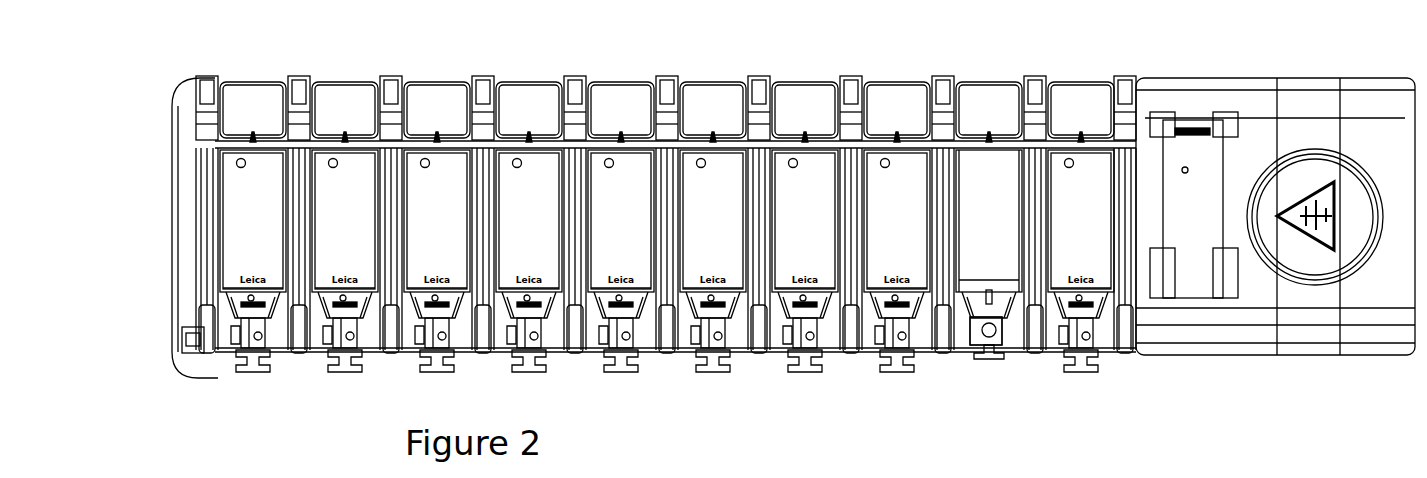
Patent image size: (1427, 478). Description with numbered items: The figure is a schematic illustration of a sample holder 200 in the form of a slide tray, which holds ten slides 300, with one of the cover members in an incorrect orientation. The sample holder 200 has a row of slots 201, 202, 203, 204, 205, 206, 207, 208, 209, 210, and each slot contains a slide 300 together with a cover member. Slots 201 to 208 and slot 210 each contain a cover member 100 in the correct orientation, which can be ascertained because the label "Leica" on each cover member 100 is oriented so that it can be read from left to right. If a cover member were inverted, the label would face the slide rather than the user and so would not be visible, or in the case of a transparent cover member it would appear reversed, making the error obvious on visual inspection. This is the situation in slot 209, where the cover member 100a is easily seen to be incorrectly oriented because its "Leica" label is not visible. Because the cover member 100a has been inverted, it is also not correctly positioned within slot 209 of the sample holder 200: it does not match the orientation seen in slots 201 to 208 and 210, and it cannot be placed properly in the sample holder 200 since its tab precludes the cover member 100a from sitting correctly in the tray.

The cover member 100 is at (197, 209).
The cover member 100a is at (983, 230).
The sample holder 200 is at (187, 376).
The slot 201 is at (253, 349).
The slot 202 is at (345, 349).
The slot 203 is at (437, 349).
The slot 204 is at (529, 349).
The slot 205 is at (621, 349).
The slot 206 is at (713, 349).
The slot 207 is at (805, 349).
The slot 208 is at (897, 349).
The slot 209 is at (989, 348).
The slot 210 is at (1081, 349).
The slide 300 is at (248, 76).